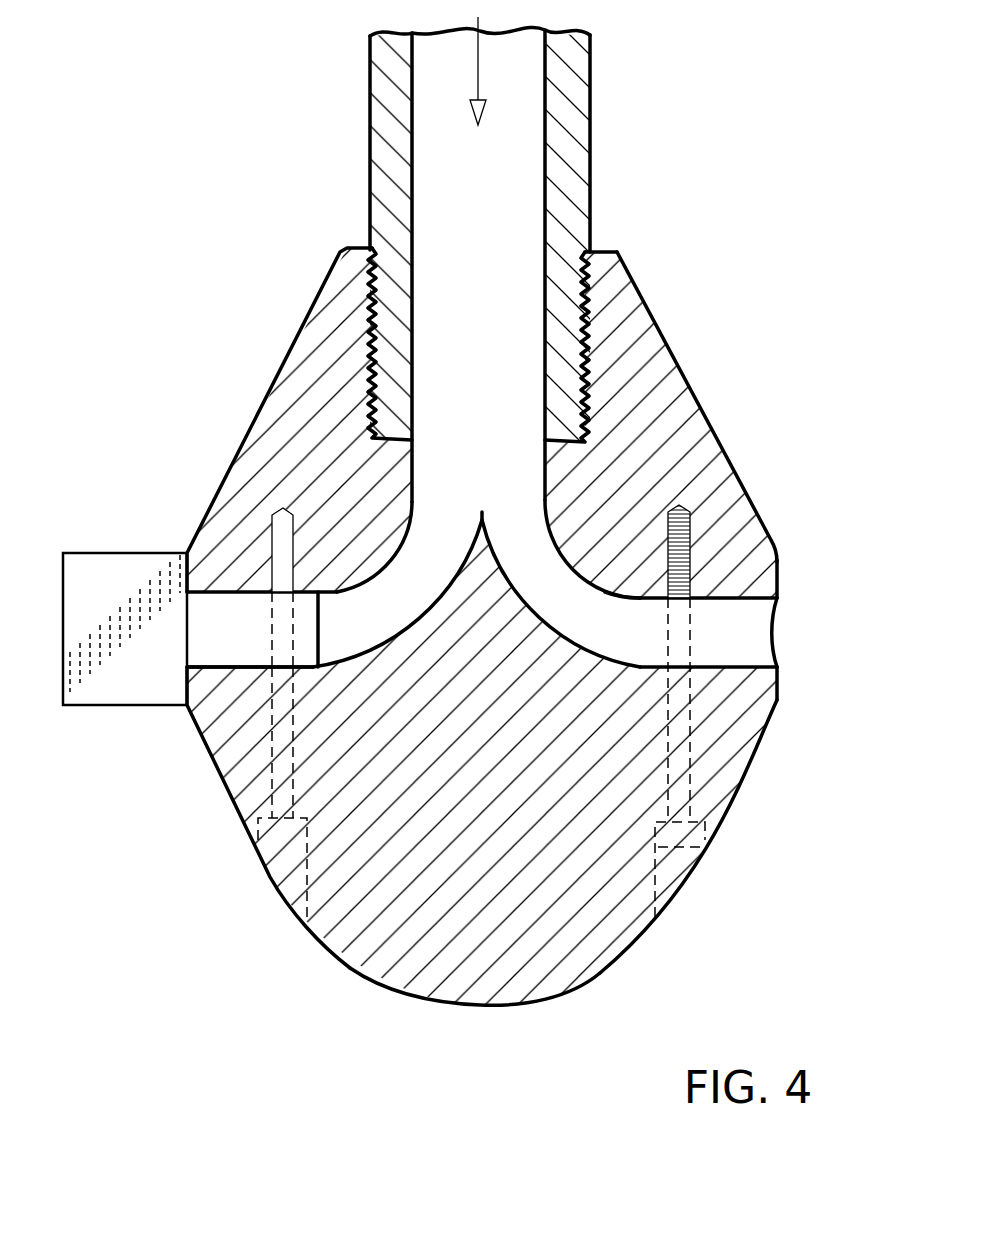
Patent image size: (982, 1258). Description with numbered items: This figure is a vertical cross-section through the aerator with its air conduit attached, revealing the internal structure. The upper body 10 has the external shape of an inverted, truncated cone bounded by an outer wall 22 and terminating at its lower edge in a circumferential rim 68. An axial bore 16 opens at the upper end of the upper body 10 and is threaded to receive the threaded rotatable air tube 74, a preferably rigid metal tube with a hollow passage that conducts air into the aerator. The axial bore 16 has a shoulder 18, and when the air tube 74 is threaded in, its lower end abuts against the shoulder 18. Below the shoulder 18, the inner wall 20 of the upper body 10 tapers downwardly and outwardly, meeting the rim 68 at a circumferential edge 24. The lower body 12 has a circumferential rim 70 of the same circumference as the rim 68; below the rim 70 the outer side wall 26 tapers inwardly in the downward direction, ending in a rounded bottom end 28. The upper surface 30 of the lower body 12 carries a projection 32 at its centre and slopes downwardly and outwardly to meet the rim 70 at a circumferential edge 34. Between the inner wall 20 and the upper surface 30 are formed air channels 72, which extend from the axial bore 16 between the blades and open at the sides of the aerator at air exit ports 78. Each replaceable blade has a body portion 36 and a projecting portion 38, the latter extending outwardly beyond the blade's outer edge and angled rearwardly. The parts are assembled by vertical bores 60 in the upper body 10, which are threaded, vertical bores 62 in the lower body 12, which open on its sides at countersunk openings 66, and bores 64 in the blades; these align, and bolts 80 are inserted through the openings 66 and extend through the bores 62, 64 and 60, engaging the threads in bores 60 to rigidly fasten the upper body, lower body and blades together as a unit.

The upper body 10 is at (267, 417).
The lower body 12 is at (620, 935).
The axial bore 16 is at (587, 306).
The shoulder 18 is at (413, 440).
The inner wall 20 is at (560, 563).
The outer wall 22 is at (703, 395).
The circumferential edge 24 is at (777, 598).
The outer side wall 26 is at (740, 793).
The rounded bottom end 28 is at (480, 1006).
The upper surface 30 is at (642, 668).
The projection 32 is at (478, 514).
The circumferential edge 34 is at (777, 665).
The body portion 36 is at (228, 622).
The projecting portion 38 is at (108, 555).
The vertical bores 60 is at (268, 546).
The vertical bores 62 is at (270, 752).
The bores 64 is at (323, 620).
The countersunk openings 66 is at (290, 860).
The circumferential rim 68 is at (780, 580).
The circumferential rim 70 is at (780, 700).
The air channels 72 is at (537, 606).
The air tube 74 is at (593, 110).
The air exit ports 78 is at (747, 637).
The bolts 80 is at (687, 847).